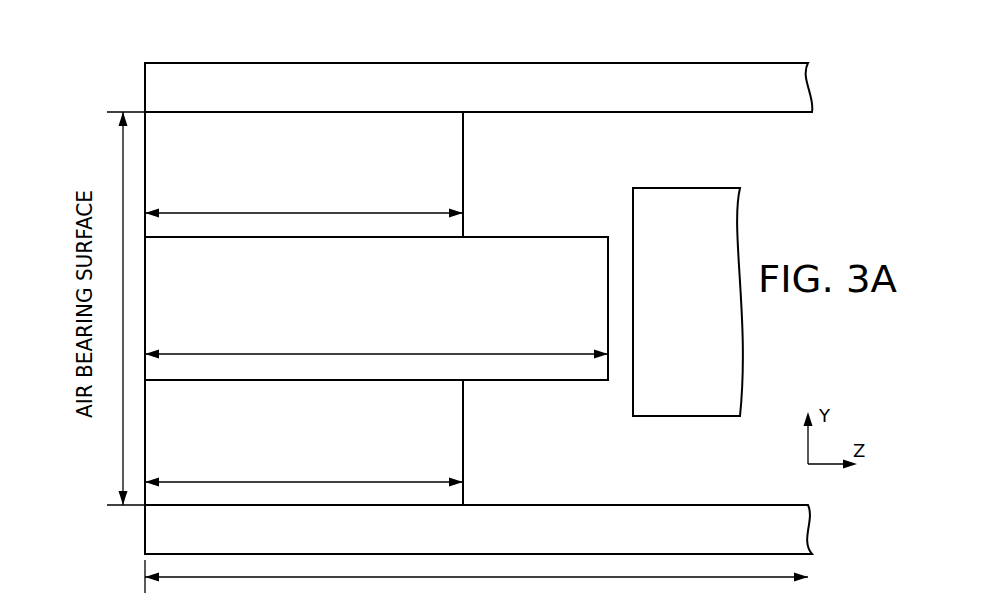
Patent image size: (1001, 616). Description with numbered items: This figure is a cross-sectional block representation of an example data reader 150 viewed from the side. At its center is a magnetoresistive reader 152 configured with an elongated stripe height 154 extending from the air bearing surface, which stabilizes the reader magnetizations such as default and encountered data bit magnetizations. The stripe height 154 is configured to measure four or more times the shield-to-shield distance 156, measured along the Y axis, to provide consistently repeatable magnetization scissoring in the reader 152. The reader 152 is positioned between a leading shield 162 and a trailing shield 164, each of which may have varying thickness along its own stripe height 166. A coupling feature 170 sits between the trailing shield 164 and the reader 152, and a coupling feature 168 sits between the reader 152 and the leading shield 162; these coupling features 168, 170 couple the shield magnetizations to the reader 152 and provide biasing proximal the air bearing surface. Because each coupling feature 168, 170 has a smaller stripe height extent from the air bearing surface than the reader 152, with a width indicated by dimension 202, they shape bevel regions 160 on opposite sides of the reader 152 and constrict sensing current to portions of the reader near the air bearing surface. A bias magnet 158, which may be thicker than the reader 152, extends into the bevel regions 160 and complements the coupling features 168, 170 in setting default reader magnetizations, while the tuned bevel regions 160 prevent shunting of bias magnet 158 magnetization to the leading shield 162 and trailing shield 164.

The data reader 150 is at (150, 48).
The magnetoresistive reader 152 is at (185, 261).
The stripe height 154 is at (376, 365).
The shield-to-shield distance 156 is at (122, 308).
The bias magnet 158 is at (674, 215).
The bevel regions 160 is at (556, 174).
The leading shield 162 is at (185, 538).
The trailing shield 164 is at (185, 98).
The stripe height of shields 166 is at (476, 580).
The coupling feature 168 is at (185, 405).
The coupling feature 170 is at (185, 138).
The width of coupling feature 202 is at (304, 357).